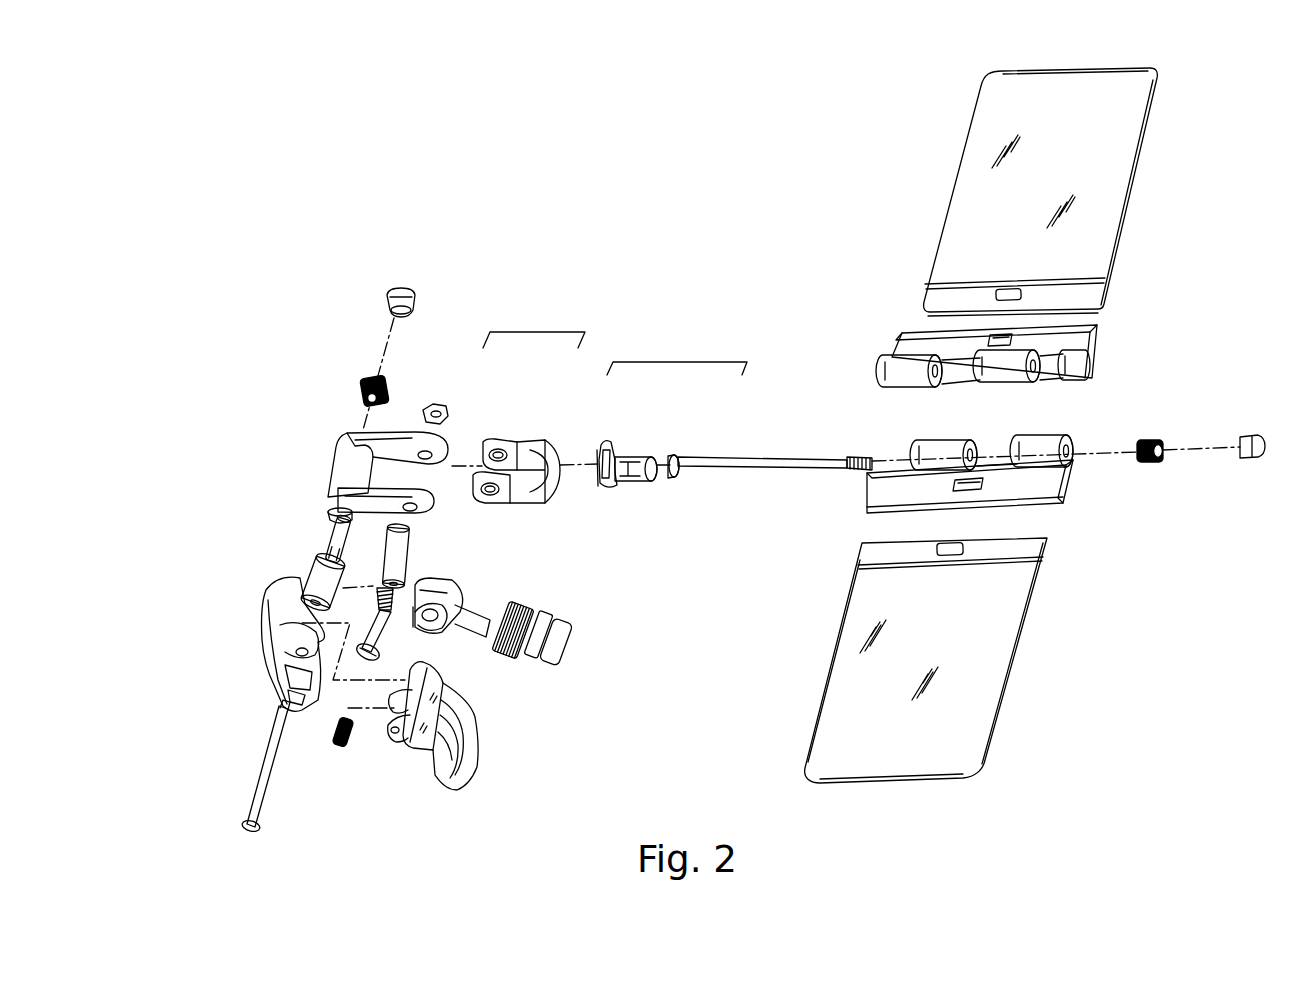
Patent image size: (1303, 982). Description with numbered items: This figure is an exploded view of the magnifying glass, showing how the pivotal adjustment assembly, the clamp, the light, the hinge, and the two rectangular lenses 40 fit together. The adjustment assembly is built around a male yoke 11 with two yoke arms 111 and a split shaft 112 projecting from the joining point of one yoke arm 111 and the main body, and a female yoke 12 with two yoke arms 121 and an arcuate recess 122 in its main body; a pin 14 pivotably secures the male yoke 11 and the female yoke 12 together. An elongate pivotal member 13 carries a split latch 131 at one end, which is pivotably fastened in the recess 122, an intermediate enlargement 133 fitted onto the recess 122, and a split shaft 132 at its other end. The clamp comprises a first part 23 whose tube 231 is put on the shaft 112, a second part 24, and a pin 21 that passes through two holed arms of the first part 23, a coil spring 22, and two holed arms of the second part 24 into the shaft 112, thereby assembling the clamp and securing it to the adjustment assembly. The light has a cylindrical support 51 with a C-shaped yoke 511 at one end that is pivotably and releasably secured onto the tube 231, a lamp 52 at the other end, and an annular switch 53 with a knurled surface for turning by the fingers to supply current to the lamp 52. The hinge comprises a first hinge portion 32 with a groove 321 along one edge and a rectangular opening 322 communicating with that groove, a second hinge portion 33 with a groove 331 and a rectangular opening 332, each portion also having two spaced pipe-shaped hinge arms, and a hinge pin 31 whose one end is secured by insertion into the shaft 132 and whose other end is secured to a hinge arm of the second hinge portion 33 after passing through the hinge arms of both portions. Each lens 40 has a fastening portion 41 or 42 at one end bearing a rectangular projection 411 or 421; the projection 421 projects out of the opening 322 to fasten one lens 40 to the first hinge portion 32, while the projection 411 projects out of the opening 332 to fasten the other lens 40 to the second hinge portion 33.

The male yoke 11 is at (333, 463).
The yoke arm 111 is at (393, 437).
The split shaft 112 is at (335, 525).
The female yoke 12 is at (540, 332).
The yoke arm 121 is at (493, 440).
The arcuate recess 122 is at (552, 437).
The elongate pivotal member 13 is at (677, 360).
The split latch 131 is at (579, 458).
The split shaft 132 is at (658, 450).
The intermediate enlargement 133 is at (610, 441).
The pin 14 is at (405, 538).
The pin 21 is at (265, 766).
The coil spring 22 is at (355, 738).
The first part 23 is at (273, 603).
The tube 231 is at (300, 578).
The second part 24 is at (470, 733).
The hinge pin 31 is at (795, 457).
The first hinge portion 32 is at (908, 340).
The groove 321 is at (1095, 327).
The rectangular opening 322 is at (983, 343).
The second hinge portion 33 is at (1050, 479).
The groove 331 is at (1045, 510).
The rectangular opening 332 is at (977, 476).
The rectangular lens 40 is at (1102, 243).
The fastening portion 41 is at (1045, 552).
The rectangular projection 411 is at (933, 552).
The fastening portion 42 is at (1092, 292).
The rectangular projection 421 is at (982, 287).
The cylindrical support 51 is at (480, 603).
The C-shaped yoke 511 is at (440, 627).
The lamp 52 is at (567, 647).
The annular switch 53 is at (527, 660).